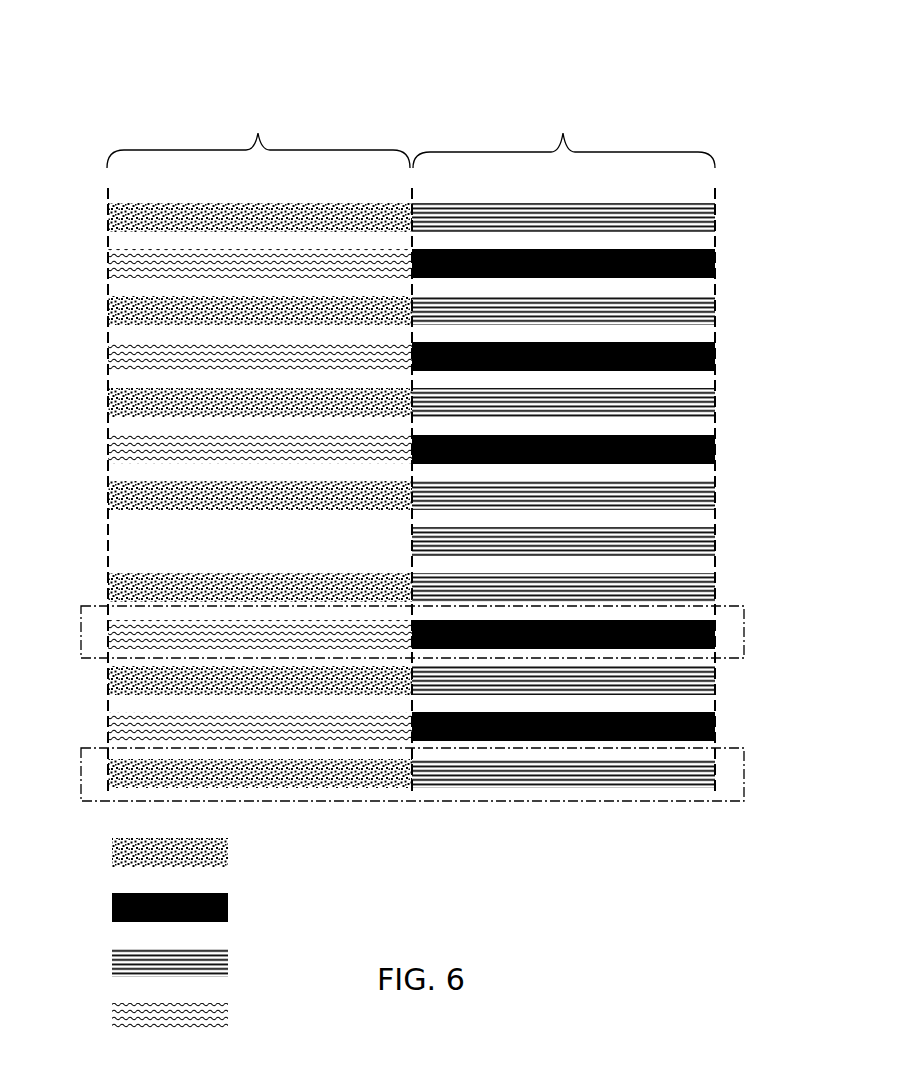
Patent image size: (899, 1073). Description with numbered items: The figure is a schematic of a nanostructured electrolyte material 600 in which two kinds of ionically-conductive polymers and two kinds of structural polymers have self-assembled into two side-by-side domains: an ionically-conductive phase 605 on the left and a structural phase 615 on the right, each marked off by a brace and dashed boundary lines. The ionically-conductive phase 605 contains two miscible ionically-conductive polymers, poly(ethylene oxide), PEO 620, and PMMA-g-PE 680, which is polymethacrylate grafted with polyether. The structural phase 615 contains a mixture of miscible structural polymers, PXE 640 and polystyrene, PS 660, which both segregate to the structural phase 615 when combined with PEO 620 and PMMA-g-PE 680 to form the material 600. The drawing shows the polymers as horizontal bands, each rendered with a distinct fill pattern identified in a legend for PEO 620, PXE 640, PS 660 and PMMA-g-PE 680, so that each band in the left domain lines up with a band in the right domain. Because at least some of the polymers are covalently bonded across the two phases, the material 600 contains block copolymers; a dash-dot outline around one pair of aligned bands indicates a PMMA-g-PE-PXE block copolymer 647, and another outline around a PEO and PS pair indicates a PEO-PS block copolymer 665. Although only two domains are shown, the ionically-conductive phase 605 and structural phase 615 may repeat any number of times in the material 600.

The electrolyte material 600 is at (147, 127).
The ionically-conductive phase 605 is at (259, 441).
The structural phase 615 is at (563, 440).
The PEO 620 is at (138, 851).
The PXE 640 is at (138, 907).
The PMMA-g-PE-PXE block copolymer 647 is at (743, 600).
The PS 660 is at (138, 962).
The PEO-PS block copolymer 665 is at (637, 820).
The PMMA-g-PE 680 is at (138, 1017).